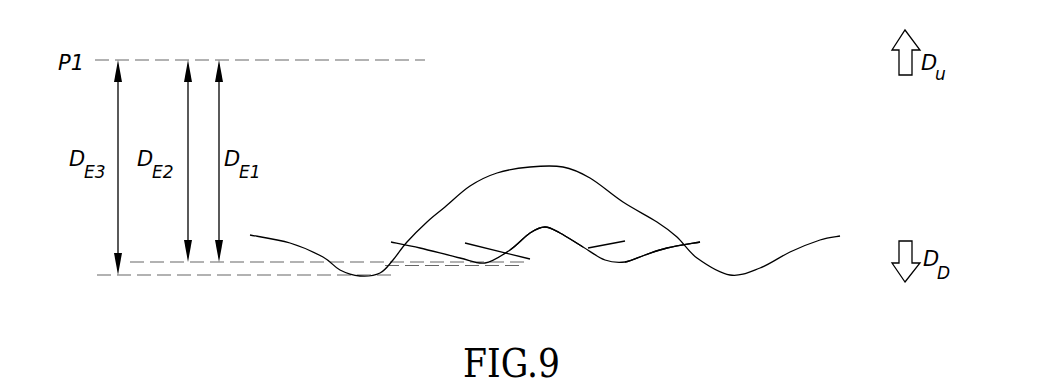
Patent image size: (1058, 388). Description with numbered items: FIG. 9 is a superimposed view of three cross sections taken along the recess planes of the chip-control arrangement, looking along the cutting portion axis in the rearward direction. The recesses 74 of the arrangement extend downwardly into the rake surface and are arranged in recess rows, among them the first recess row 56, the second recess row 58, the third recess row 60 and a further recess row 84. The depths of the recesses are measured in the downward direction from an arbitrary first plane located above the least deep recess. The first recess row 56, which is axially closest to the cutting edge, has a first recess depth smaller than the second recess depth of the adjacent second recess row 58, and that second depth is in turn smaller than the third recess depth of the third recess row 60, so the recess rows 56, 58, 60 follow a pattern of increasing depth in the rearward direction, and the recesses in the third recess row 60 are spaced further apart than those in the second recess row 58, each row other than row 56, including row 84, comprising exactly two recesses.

The first recess row 56 is at (603, 245).
The second recess row 58 is at (675, 245).
The third recess row 60 is at (576, 219).
The recess 74 is at (546, 234).
The recess row 84 is at (818, 237).